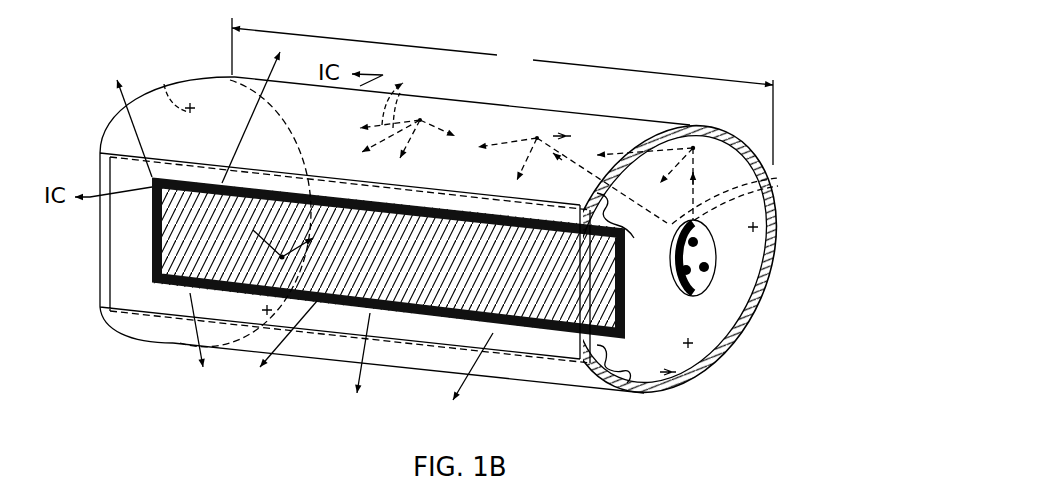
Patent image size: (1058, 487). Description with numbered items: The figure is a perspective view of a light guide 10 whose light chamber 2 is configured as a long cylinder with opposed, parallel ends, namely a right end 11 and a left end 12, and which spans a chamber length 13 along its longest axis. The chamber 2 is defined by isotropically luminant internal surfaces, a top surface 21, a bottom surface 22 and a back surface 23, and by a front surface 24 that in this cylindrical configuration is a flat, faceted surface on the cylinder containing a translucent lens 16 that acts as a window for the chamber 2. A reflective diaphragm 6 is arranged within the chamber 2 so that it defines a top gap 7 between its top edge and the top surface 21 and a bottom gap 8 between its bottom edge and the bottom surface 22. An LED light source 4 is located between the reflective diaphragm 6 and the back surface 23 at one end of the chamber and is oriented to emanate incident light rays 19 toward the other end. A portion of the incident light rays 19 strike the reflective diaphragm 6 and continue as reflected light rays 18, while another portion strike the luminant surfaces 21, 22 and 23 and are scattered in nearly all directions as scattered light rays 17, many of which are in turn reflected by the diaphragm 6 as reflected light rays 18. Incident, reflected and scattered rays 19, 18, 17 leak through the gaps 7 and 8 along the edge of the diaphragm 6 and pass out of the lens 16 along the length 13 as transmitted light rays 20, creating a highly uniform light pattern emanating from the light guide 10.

The light chamber 2 is at (790, 207).
The LED light source 4 is at (693, 284).
The reflective diaphragm 6 is at (408, 376).
The top gap 7 is at (634, 238).
The bottom gap 8 is at (625, 360).
The light guide 10 is at (158, 75).
The right end 11 is at (690, 347).
The left end 12 is at (164, 83).
The chamber length 13 is at (502, 91).
The translucent lens 16 is at (128, 314).
The scattered light rays 17 is at (405, 98).
The reflected light rays 18 is at (383, 269).
The incident light rays 19 is at (432, 120).
The transmitted light rays 20 is at (247, 118).
The top surface 21 is at (563, 132).
The bottom surface 22 is at (682, 393).
The back surface 23 is at (778, 213).
The front surface 24 is at (265, 314).